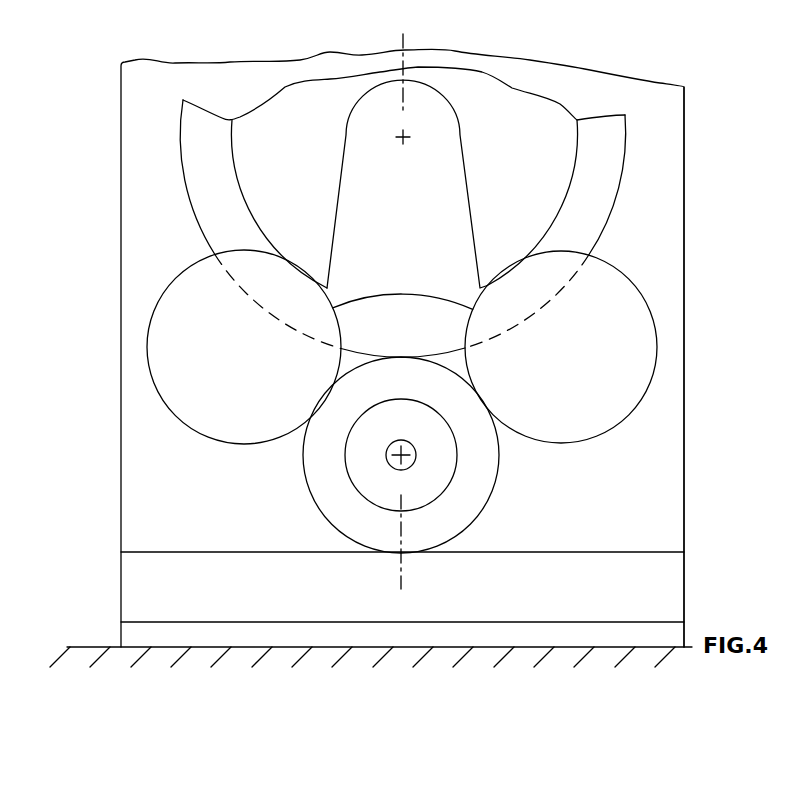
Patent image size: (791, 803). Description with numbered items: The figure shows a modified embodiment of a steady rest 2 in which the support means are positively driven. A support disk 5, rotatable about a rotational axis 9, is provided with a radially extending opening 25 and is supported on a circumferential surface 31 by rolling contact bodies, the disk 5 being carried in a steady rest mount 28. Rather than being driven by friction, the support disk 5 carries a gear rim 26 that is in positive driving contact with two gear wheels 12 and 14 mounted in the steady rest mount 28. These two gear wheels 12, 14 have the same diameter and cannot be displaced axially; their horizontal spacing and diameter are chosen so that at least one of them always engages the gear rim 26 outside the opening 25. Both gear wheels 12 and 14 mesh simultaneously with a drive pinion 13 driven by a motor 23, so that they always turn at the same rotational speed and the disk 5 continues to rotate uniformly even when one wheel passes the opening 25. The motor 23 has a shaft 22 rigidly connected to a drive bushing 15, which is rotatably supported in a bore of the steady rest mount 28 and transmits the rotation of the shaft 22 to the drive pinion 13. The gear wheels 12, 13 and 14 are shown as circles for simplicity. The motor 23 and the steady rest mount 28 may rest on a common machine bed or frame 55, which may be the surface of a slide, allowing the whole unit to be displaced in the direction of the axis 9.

The steady rest 2 is at (707, 137).
The support disk 5 is at (381, 34).
The rotational axis 9 is at (400, 140).
The gear wheel 12 is at (207, 413).
The drive pinion 13 is at (323, 489).
The gear wheel 14 is at (570, 432).
The drive bushing 15 is at (428, 487).
The shaft 22 is at (387, 457).
The motor 23 is at (383, 312).
The radially extending opening 25 is at (365, 212).
The gear rim 26 is at (561, 204).
The steady rest mount 28 is at (668, 297).
The circumferential surface 31 is at (625, 177).
The machine bed or frame 55 is at (334, 647).